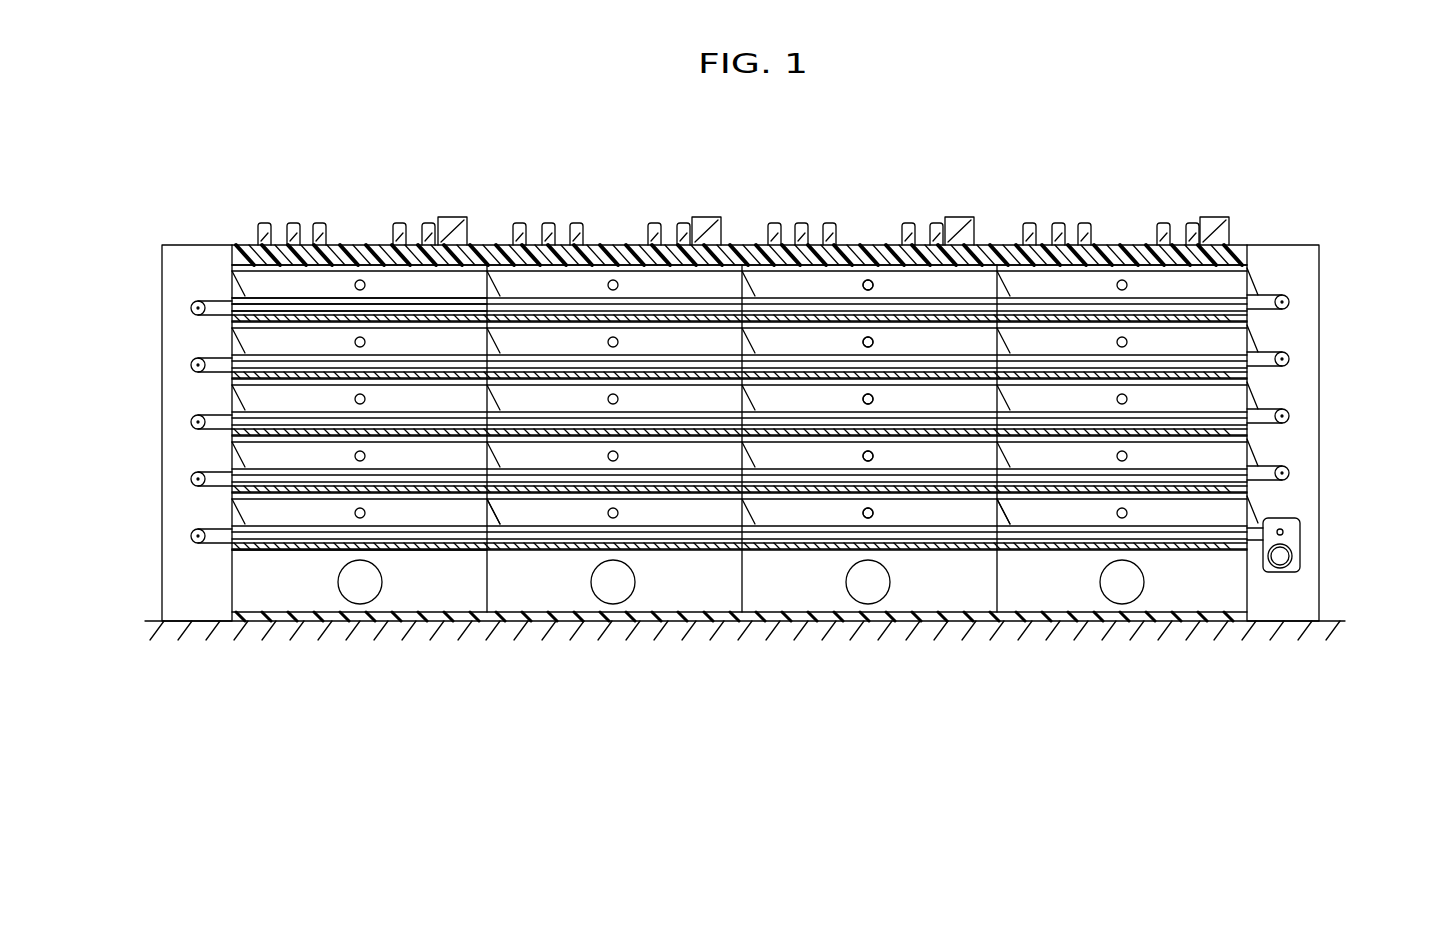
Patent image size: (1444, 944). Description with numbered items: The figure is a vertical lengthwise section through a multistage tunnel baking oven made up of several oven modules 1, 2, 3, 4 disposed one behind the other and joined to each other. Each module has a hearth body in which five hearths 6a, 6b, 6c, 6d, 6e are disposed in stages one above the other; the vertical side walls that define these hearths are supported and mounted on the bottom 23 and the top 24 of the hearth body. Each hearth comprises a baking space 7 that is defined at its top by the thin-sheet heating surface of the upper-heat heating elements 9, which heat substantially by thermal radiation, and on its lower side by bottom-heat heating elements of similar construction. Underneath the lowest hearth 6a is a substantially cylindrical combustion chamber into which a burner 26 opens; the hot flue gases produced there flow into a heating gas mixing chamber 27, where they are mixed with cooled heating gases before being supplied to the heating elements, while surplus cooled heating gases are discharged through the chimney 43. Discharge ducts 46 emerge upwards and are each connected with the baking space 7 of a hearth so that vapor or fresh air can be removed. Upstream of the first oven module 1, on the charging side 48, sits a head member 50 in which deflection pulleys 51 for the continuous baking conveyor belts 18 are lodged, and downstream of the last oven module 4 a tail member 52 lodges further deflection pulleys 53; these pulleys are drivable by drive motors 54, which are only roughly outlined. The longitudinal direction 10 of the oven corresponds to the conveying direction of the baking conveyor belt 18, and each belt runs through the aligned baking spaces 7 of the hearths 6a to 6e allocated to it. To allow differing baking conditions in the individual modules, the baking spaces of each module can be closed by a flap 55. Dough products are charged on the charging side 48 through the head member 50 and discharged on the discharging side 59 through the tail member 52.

The oven module 1 is at (357, 225).
The oven module 2 is at (611, 225).
The oven module 3 is at (864, 225).
The oven module 4 is at (1121, 225).
The hearth 6a is at (1214, 517).
The hearth 6b is at (1214, 460).
The hearth 6c is at (1214, 402).
The hearth 6d is at (1214, 345).
The hearth 6e is at (1214, 285).
The baking space 7 is at (929, 296).
The upper-heat heating elements 9 is at (1017, 264).
The longitudinal direction 10 is at (716, 341).
The baking conveyor belt 18 is at (207, 289).
The bottom 23 is at (1050, 616).
The top 24 is at (1068, 258).
The burner 26 is at (358, 582).
The heating gas mixing chamber 27 is at (447, 582).
The chimney 43 is at (453, 217).
The discharge ducts 46 is at (829, 222).
The charging side 48 is at (129, 419).
The head member 50 is at (202, 232).
The deflection pulleys 51 is at (191, 363).
The tail member 52 is at (1293, 232).
The deflection pulleys 53 is at (1291, 301).
The drive motors 54 is at (1301, 548).
The flap 55 is at (497, 520).
The discharging side 59 is at (1389, 598).